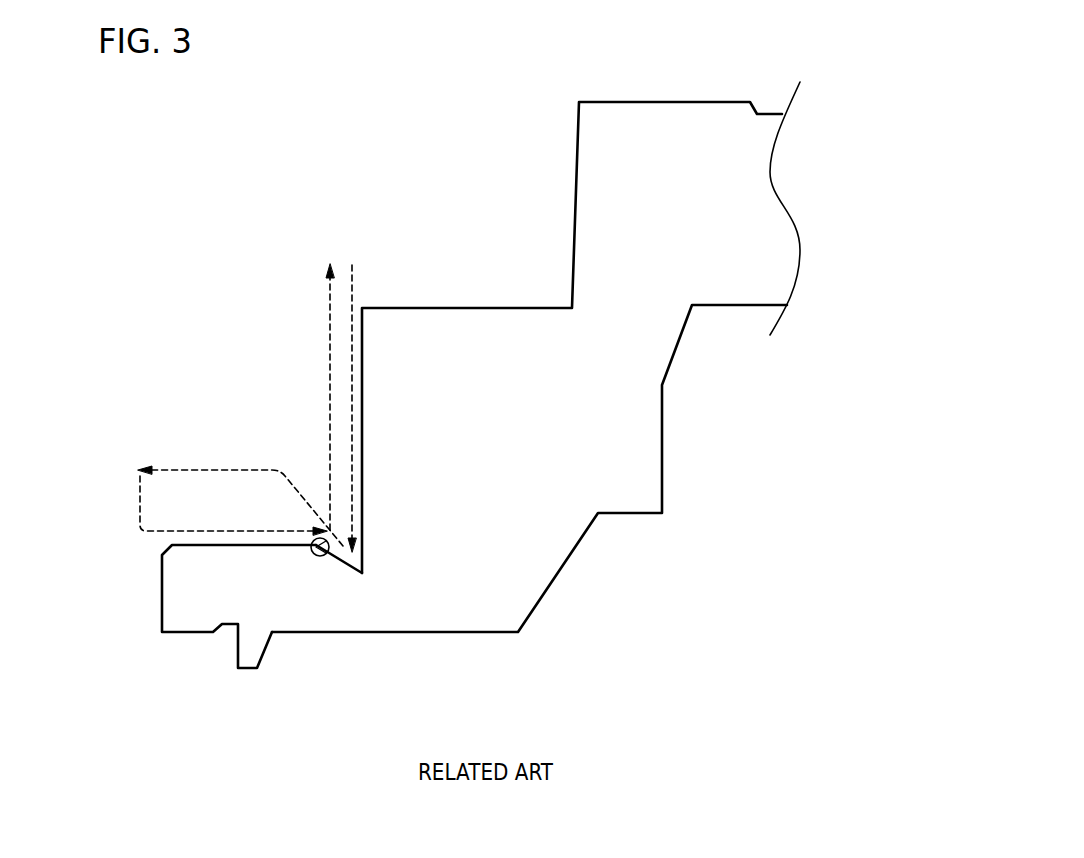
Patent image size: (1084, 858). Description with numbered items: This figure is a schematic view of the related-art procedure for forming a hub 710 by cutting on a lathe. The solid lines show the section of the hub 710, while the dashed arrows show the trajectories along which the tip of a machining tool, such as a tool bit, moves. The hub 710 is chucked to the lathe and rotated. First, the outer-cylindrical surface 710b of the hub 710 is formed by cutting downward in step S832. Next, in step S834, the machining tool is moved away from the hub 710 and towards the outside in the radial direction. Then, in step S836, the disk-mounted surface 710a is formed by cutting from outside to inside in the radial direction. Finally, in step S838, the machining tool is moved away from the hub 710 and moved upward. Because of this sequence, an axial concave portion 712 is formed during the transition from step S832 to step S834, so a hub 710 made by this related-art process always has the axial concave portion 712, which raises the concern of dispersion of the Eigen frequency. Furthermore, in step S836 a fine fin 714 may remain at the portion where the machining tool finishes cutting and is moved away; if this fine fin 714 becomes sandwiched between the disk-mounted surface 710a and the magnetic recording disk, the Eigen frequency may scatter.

The hub 710 is at (518, 402).
The disk-mounted surface 710a is at (217, 537).
The outer-cylindrical surface 710b is at (362, 442).
The axial concave portion 712 is at (367, 582).
The fine fin 714 is at (310, 557).
The step of cutting downward S832 is at (353, 288).
The step of moving the machining tool radially outward S834 is at (218, 470).
The step of cutting radially inward S836 is at (155, 533).
The step of moving the machining tool upward S838 is at (330, 288).